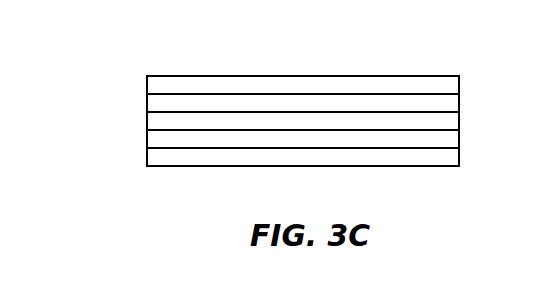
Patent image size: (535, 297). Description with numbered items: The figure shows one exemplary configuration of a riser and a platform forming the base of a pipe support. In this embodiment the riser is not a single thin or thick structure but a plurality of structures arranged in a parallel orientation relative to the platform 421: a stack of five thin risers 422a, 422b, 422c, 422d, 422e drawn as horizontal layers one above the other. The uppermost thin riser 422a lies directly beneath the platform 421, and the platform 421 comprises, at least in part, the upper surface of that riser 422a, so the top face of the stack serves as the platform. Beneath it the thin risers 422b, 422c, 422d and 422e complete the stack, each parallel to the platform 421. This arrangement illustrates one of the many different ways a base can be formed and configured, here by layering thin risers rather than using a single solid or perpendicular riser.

The platform 421 is at (300, 76).
The thin riser 422a is at (147, 85).
The thin riser 422b is at (147, 103).
The thin riser 422c is at (147, 121).
The thin riser 422d is at (147, 138).
The thin riser 422e is at (147, 156).